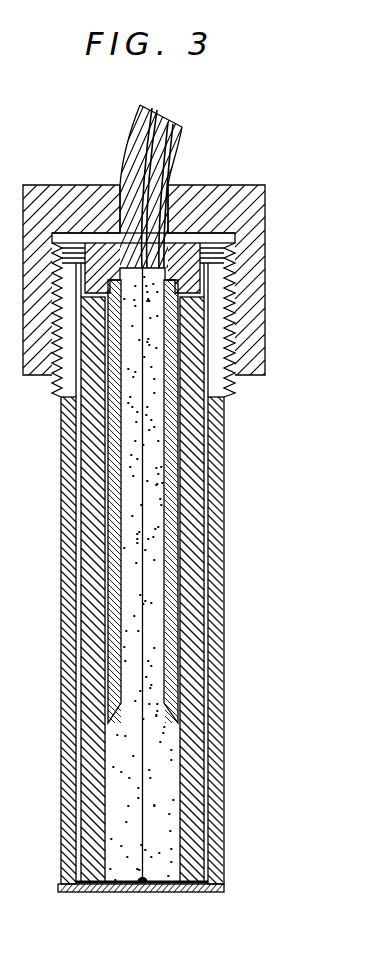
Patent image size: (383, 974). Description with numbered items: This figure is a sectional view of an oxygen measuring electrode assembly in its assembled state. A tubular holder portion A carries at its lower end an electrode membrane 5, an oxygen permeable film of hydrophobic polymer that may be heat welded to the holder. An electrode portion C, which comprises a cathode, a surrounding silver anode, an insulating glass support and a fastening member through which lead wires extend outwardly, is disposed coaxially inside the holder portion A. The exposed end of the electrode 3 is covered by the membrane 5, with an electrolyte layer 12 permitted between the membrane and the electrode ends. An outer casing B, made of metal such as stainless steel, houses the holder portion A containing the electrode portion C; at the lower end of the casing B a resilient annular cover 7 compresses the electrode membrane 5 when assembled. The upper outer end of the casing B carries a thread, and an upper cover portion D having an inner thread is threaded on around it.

The upper cover portion D is at (255, 277).
The casing B is at (213, 443).
The holder portion A is at (195, 472).
The electrode portion C is at (160, 557).
The electrolyte layer 12 is at (182, 642).
The electrode 3 is at (143, 763).
The electrode membrane 5 is at (148, 893).
The resilient annular cover 7 is at (103, 893).